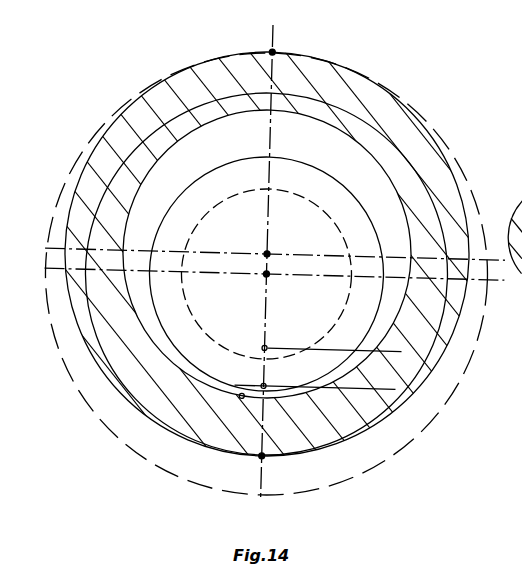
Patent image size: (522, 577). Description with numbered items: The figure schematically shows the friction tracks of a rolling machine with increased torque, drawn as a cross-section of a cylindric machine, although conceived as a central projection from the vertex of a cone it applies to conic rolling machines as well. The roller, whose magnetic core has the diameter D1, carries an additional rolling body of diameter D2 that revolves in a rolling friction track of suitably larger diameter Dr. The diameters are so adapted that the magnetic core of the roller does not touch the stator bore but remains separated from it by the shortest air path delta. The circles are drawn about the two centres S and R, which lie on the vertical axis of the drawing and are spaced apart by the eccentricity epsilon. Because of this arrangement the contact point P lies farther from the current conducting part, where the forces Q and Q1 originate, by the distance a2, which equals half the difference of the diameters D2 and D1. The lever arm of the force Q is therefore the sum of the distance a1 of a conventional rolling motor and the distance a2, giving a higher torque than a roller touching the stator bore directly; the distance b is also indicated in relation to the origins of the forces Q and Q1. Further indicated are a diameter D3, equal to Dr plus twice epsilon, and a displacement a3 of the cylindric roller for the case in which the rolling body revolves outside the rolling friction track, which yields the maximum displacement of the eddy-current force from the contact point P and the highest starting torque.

The diameter D3 is at (267, 53).
The diameter of the rolling body D2 is at (340, 93).
The diameter of the roller D1 is at (312, 157).
The diameter of the rolling friction track Dr is at (521, 371).
The contact point P is at (284, 28).
The center point S is at (275, 245).
The center point R is at (274, 283).
The displacement a3 is at (301, 53).
The distance a2 is at (238, 398).
The distance a1 is at (160, 398).
The distance b is at (334, 348).
The force Q is at (400, 386).
The force Q1 is at (405, 348).
The shortest air path delta is at (177, 378).
The eccentricity epsilon is at (175, 232).